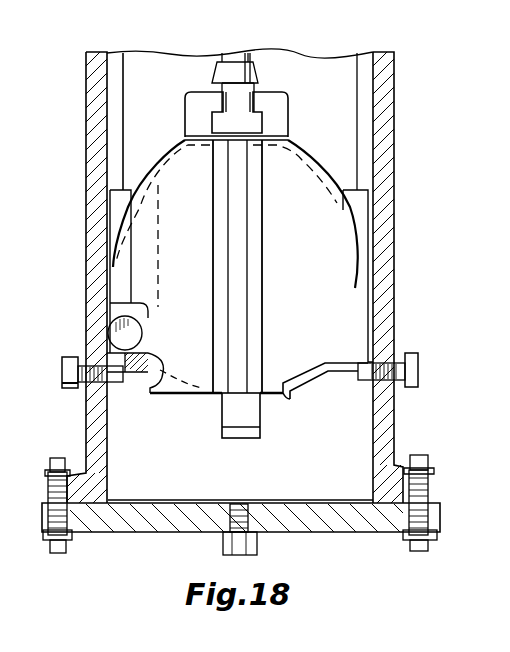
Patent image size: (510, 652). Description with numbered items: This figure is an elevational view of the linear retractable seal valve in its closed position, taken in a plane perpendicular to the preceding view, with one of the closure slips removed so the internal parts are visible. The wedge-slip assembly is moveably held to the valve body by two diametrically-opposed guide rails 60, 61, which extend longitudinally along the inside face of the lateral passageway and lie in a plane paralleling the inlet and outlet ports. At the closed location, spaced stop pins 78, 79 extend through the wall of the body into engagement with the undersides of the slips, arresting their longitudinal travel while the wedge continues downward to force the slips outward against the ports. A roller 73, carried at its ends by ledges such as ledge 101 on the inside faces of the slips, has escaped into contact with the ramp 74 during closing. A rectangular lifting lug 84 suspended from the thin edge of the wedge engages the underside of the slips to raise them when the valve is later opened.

The guide rail 60 is at (124, 96).
The guide rail 61 is at (356, 91).
The roller 73 is at (114, 332).
The ramp 74 is at (117, 319).
The stop pin 78 is at (62, 364).
The stop pin 79 is at (419, 361).
The lifting lug 84 is at (260, 431).
The ledge 101 is at (134, 385).